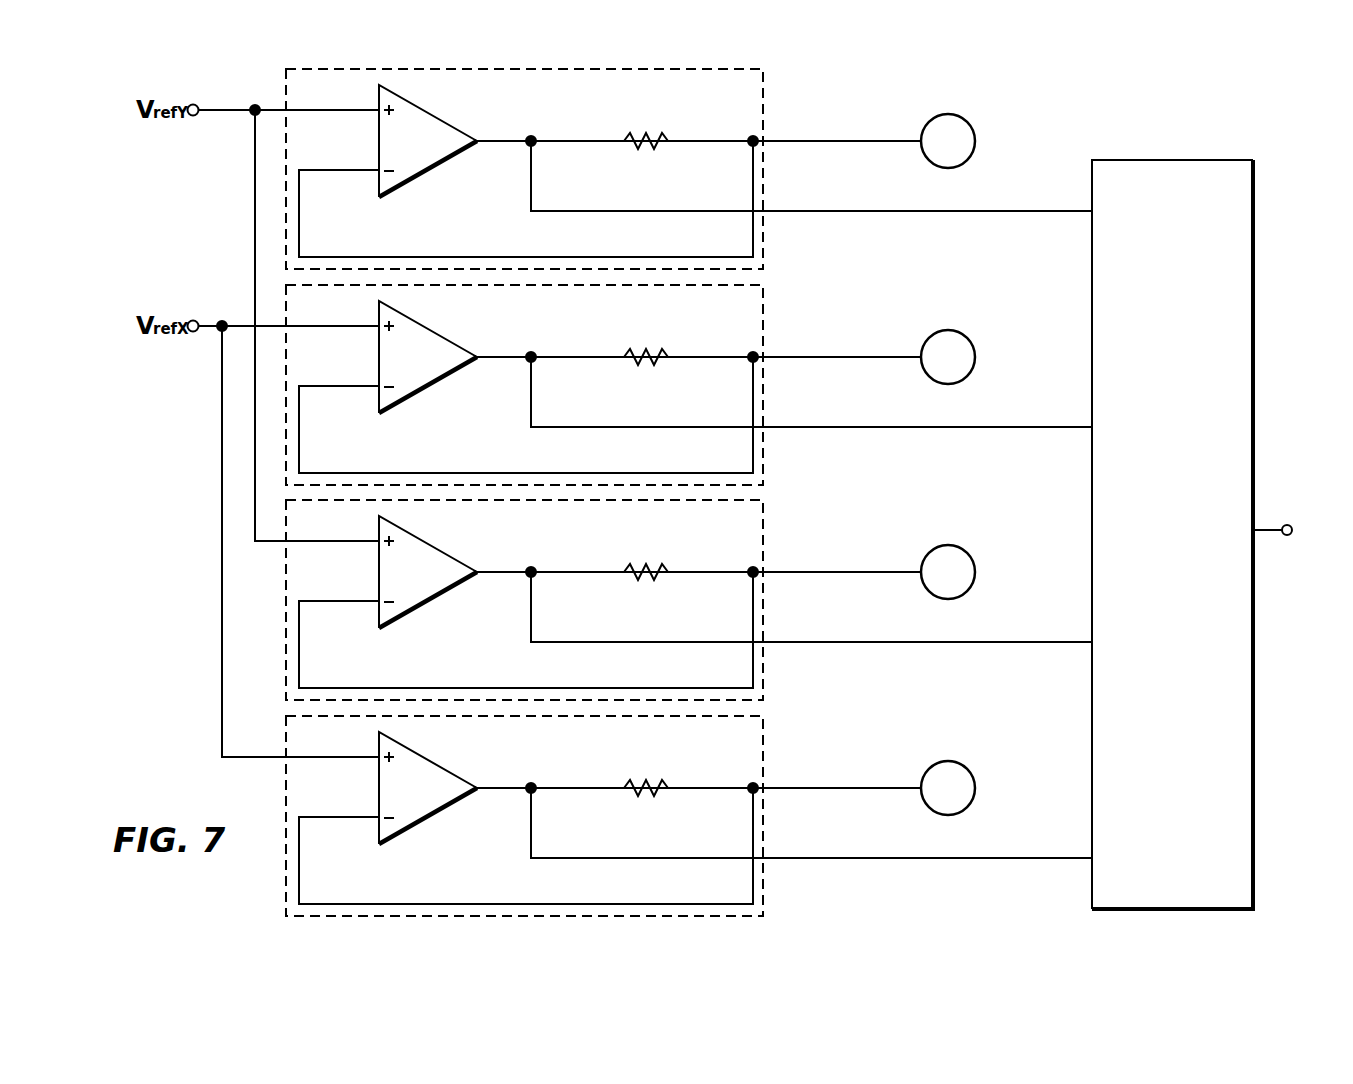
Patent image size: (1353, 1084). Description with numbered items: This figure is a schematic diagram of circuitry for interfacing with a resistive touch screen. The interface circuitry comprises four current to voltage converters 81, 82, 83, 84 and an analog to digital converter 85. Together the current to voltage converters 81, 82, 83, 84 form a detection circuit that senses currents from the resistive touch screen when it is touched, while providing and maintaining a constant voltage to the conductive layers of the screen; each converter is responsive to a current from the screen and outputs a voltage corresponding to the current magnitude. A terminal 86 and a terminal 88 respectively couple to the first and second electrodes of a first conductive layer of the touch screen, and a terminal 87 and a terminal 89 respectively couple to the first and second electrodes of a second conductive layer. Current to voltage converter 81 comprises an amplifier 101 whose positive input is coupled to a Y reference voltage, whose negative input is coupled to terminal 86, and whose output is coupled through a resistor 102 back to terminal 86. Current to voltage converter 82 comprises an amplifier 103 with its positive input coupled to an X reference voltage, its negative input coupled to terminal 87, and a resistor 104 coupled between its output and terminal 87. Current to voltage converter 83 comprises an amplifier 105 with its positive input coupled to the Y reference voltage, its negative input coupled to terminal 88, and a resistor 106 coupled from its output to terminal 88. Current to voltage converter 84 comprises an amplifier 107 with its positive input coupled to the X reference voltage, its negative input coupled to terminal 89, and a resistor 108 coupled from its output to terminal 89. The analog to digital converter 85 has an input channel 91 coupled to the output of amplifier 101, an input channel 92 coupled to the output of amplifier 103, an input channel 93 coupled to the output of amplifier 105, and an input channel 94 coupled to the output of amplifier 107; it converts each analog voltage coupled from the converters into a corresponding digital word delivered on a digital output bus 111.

The current to voltage converter 81 is at (763, 103).
The current to voltage converter 82 is at (557, 385).
The current to voltage converter 83 is at (557, 600).
The current to voltage converter 84 is at (557, 816).
The analog to digital converter 85 is at (1175, 541).
The terminal 86 is at (935, 154).
The terminal 87 is at (948, 357).
The terminal 88 is at (948, 572).
The terminal 89 is at (948, 788).
The input channel 91 is at (831, 182).
The input channel 92 is at (831, 398).
The input channel 93 is at (831, 613).
The input channel 94 is at (831, 829).
The amplifier 101 is at (398, 153).
The resistor 102 is at (642, 132).
The amplifier 103 is at (609, 387).
The resistor 104 is at (657, 333).
The amplifier 105 is at (609, 602).
The resistor 106 is at (657, 548).
The amplifier 107 is at (609, 818).
The resistor 108 is at (657, 764).
The digital output bus 111 is at (1290, 523).